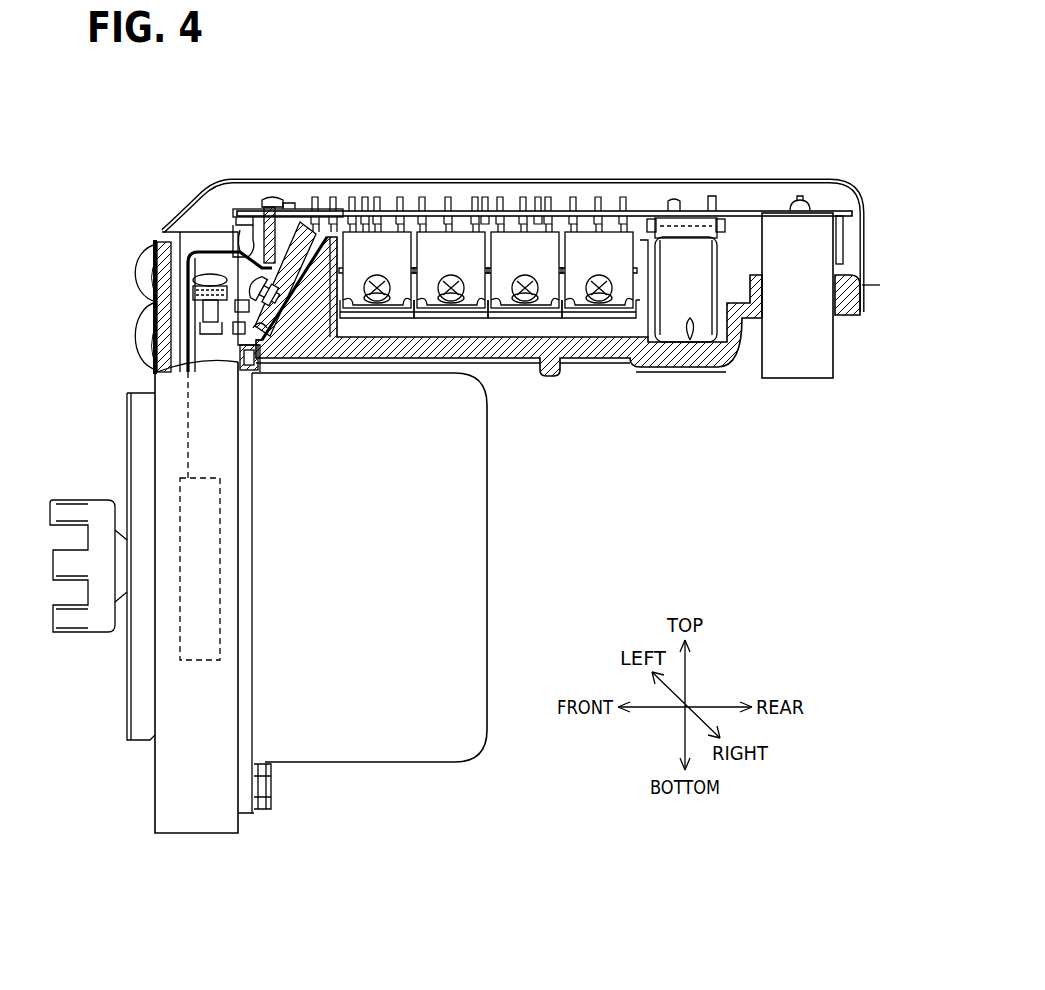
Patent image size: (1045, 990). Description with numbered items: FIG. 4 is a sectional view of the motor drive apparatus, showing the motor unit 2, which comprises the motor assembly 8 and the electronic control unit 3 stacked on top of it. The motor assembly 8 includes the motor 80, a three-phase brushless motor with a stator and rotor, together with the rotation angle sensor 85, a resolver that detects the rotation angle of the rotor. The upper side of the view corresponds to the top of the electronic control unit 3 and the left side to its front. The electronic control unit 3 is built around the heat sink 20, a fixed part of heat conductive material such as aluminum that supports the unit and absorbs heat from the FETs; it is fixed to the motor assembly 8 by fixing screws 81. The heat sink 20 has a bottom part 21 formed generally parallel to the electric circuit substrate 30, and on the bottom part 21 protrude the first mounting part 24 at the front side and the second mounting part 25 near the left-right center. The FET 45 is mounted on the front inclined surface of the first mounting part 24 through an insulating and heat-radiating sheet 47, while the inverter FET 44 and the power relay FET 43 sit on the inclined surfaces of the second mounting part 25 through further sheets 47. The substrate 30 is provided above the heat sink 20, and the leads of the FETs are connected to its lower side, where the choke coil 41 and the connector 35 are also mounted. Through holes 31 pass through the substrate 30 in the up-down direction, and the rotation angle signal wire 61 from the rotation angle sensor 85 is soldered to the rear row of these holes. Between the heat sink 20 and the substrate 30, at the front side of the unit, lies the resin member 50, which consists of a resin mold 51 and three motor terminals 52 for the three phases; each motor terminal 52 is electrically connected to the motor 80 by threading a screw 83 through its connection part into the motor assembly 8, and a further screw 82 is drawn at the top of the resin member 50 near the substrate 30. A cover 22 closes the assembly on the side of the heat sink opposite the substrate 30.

The motor unit 2 is at (626, 503).
The electronic control unit (ECU) 3 is at (880, 285).
The motor assembly 8 is at (297, 598).
The heat sink 20 is at (508, 358).
The bottom part 21 is at (683, 338).
The cover 22 is at (835, 182).
The first mounting part 24 is at (323, 240).
The second mounting part 25 is at (414, 218).
The electric circuit substrate 30 is at (738, 212).
The through hole 31 is at (250, 210).
The connector 35 is at (816, 362).
The choke coil 41 is at (705, 325).
The power relay FET 43 is at (585, 247).
The inverter FET 44 is at (365, 247).
The FET 45 is at (312, 243).
The insulating and heat-radiating sheet 47 is at (636, 305).
The resin member 50 is at (288, 375).
The resin mold 51 is at (303, 232).
The motor terminal 52 is at (233, 226).
The rotation angle signal wire 61 is at (182, 257).
The motor 80 is at (399, 745).
The fixing screw 81 is at (145, 278).
The fixing screw 82 is at (273, 193).
The screw 83 is at (203, 273).
The rotation angle sensor 85 is at (178, 492).